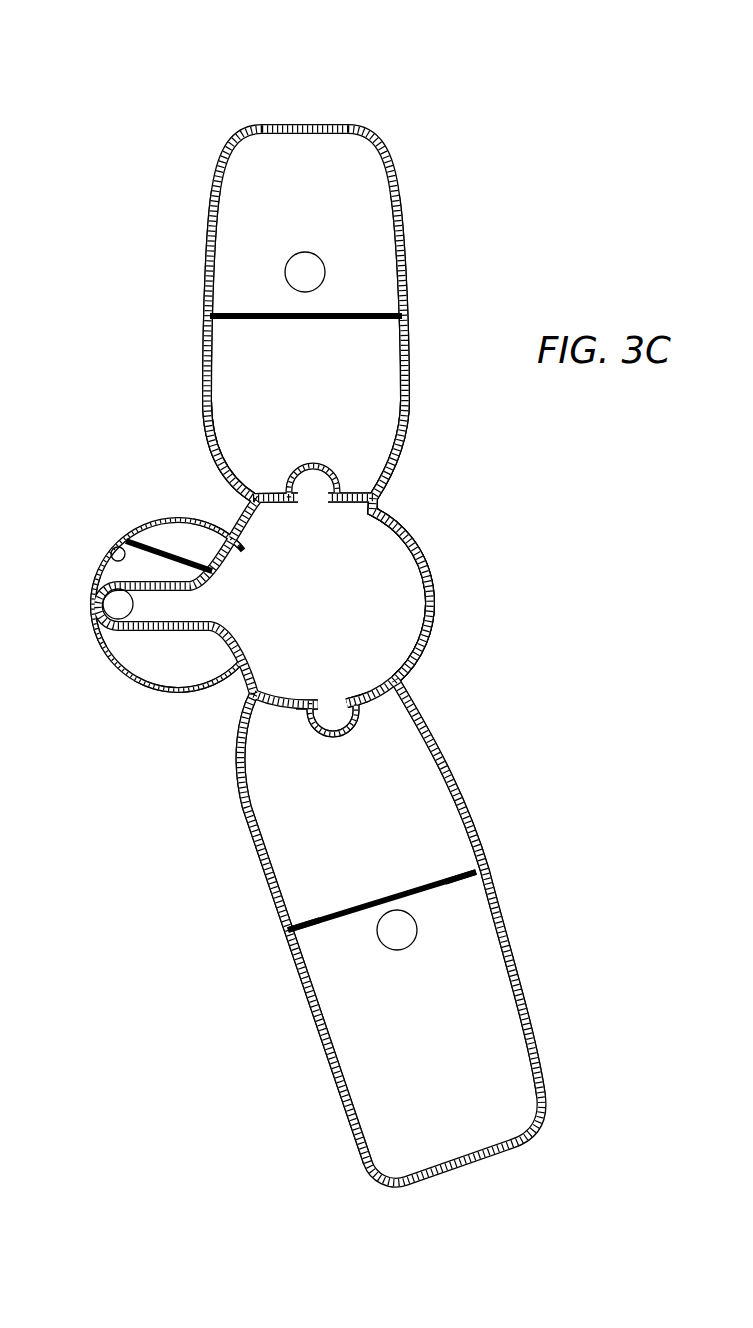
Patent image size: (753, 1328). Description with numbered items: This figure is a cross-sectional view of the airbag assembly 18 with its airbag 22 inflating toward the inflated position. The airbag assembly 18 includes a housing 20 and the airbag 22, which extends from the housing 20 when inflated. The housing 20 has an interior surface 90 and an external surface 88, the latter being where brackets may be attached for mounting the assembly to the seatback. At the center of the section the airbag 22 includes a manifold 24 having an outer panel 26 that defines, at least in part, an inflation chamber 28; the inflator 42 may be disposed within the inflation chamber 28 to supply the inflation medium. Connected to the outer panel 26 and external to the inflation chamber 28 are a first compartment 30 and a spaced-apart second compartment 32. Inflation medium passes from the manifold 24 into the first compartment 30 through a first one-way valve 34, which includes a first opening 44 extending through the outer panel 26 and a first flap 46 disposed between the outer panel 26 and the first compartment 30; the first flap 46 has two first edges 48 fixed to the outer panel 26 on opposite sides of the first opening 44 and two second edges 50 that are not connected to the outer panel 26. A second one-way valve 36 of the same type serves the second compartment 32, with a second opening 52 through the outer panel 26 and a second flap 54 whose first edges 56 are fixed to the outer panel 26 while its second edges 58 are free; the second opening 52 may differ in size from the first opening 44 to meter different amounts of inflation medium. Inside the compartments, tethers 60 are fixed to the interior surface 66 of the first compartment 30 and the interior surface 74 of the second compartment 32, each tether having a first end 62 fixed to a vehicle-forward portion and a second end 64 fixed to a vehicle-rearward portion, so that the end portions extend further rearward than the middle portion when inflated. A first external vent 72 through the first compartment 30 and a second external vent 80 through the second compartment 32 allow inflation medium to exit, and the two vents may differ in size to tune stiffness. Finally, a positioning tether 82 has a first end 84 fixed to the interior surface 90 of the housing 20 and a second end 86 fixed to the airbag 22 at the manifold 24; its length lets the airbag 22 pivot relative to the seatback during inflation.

The airbag assembly 18 is at (332, 595).
The housing 20 is at (141, 690).
The airbag 22 is at (480, 528).
The manifold 24 is at (455, 589).
The outer panel 26 is at (393, 522).
The inflation chamber 28 is at (375, 612).
The first compartment 30 is at (373, 122).
The second compartment 32 is at (550, 1001).
The first one-way valve 34 is at (300, 434).
The second one-way valve 36 is at (307, 736).
The inflator 42 is at (106, 618).
The first opening 44 is at (313, 507).
The first flap 46 is at (322, 460).
The first edges 48 is at (276, 494).
The second edges 50 is at (297, 492).
The second opening 52 is at (330, 701).
The second flap 54 is at (323, 743).
The first edges 56 is at (301, 711).
The second edges 58 is at (356, 730).
The tethers 60 is at (334, 310).
The first end 62 is at (211, 313).
The second end 64 is at (402, 313).
The interior surface 66 is at (215, 246).
The first external vent 72 is at (304, 266).
The interior surface 74 is at (460, 800).
The second external vent 80 is at (401, 934).
The positioning tether 82 is at (150, 552).
The first end 84 is at (111, 552).
The second end 86 is at (198, 540).
The external surface 88 is at (179, 692).
The interior surface 90 is at (129, 660).